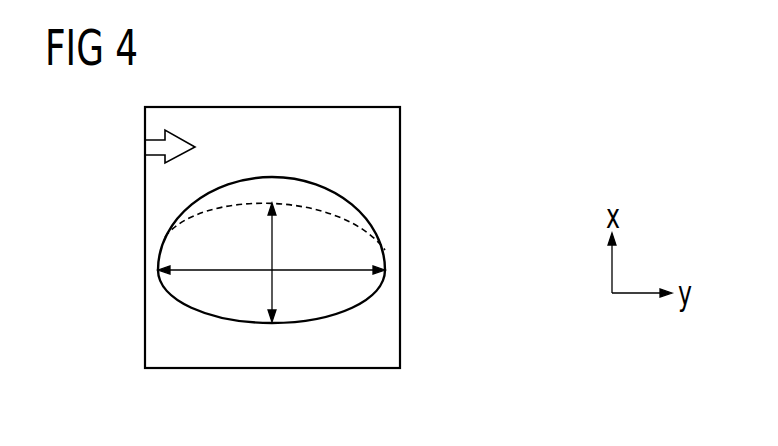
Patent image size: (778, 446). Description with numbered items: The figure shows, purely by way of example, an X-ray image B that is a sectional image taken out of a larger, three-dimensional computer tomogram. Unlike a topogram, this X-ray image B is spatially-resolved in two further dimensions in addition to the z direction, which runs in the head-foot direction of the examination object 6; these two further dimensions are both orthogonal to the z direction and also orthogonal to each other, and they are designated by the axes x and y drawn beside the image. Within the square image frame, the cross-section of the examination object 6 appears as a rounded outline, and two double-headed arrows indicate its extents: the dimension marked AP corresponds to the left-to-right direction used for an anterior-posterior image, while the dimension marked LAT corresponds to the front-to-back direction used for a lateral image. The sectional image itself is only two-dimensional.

The X-ray image B is at (131, 145).
The examination object 6 is at (158, 269).
The AP image AP is at (272, 228).
The LAT image LAT is at (322, 270).